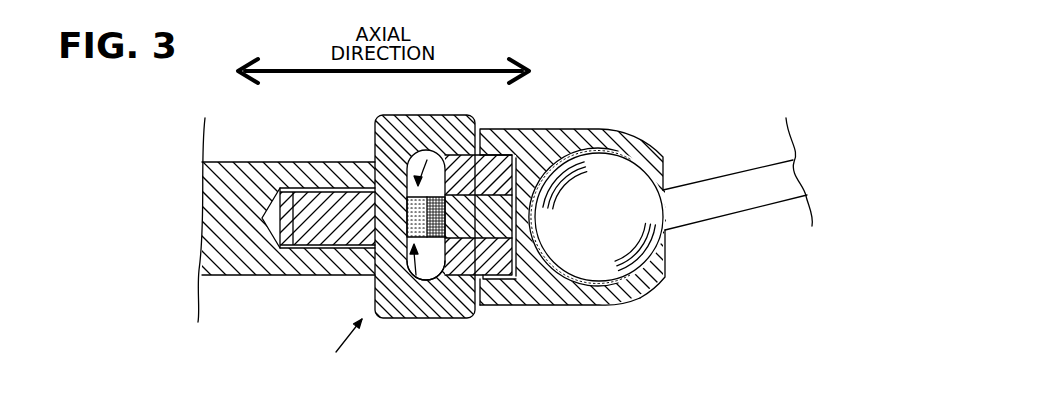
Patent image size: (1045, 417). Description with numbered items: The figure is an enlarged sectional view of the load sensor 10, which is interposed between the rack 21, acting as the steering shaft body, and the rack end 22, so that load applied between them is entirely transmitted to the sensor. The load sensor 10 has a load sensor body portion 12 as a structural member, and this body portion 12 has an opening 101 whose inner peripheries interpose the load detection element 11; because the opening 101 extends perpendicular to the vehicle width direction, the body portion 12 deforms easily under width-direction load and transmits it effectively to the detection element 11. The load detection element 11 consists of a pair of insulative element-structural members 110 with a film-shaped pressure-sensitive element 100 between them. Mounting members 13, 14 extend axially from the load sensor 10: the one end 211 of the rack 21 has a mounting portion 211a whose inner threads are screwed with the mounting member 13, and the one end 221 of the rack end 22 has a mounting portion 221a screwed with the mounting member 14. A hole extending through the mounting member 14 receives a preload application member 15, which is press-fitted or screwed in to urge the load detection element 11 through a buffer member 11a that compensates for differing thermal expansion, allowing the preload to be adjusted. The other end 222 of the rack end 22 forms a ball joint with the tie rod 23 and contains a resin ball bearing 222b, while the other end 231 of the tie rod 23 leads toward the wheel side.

The load sensor 10 is at (335, 349).
The pressure-sensitive element 100 is at (427, 160).
The opening 101 is at (416, 275).
The element-structural member 110 is at (408, 283).
The load detection element 11 is at (428, 238).
The buffer member 11a is at (440, 240).
The load sensor body portion 12 is at (391, 308).
The mounting member 13 is at (342, 234).
The mounting member 14 is at (489, 248).
The preload application member 15 is at (492, 180).
The rack 21 is at (262, 265).
The one end of the rack 211 is at (333, 162).
The mounting portion 211a is at (283, 236).
The rack end 22 is at (652, 290).
The one end of the rack end 221 is at (517, 282).
The mounting portion 221a is at (546, 292).
The other end of the rack end 222 is at (657, 260).
The ball bearing 222b is at (603, 305).
The tie rod 23 is at (757, 180).
The other end of the tie rod 231 is at (603, 190).